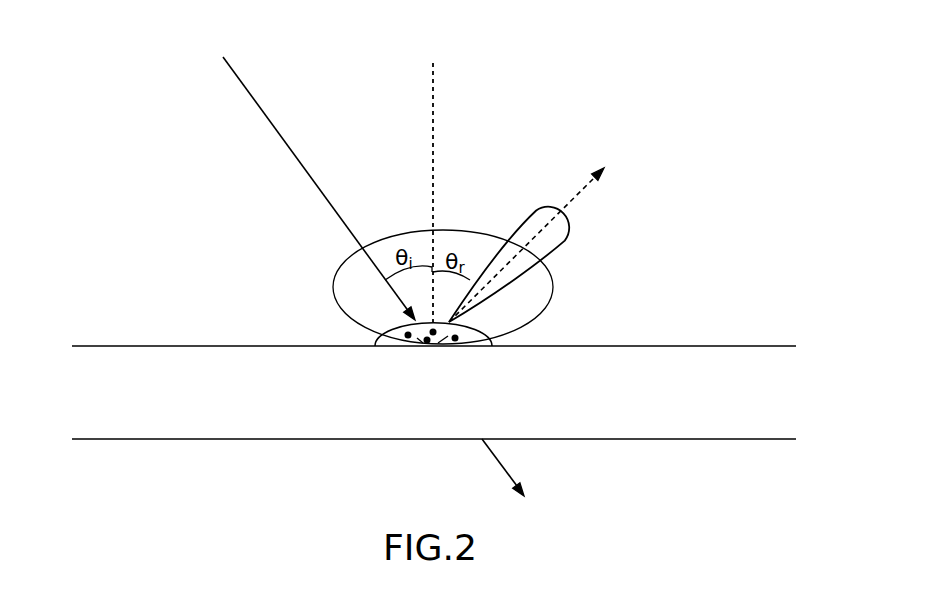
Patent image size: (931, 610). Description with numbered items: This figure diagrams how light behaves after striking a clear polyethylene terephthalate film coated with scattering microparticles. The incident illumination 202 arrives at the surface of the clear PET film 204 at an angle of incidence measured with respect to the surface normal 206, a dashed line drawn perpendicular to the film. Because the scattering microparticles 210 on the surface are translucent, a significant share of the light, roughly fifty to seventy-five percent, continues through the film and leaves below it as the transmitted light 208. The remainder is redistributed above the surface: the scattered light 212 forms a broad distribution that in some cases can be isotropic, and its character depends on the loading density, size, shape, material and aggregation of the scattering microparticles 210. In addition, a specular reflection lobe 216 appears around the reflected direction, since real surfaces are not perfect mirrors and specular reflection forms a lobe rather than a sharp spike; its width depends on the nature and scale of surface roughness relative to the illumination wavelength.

The incident illumination 202 is at (271, 169).
The clear PET film 204 is at (312, 409).
The surface normal 206 is at (496, 97).
The transmitted light 208 is at (456, 487).
The scattering microparticles 210 is at (488, 332).
The scattered light 212 is at (473, 221).
The specular reflection lobe 216 is at (571, 228).